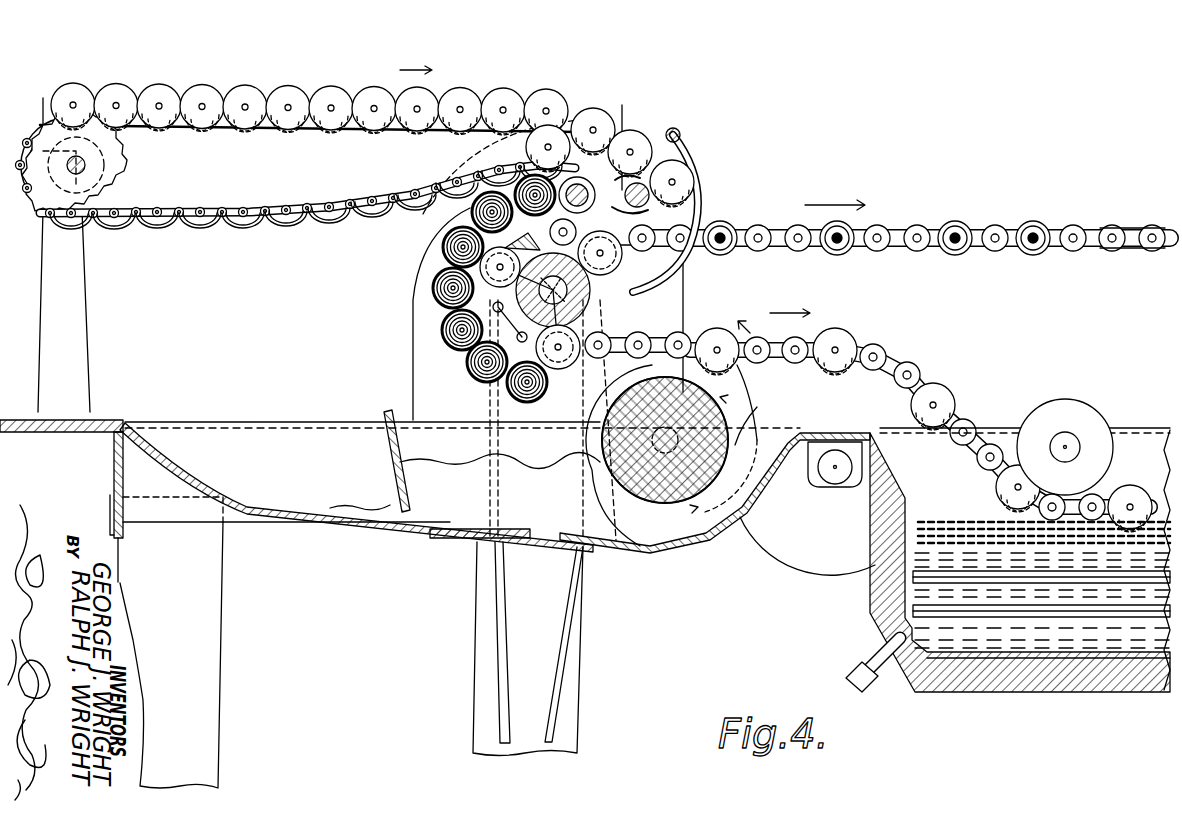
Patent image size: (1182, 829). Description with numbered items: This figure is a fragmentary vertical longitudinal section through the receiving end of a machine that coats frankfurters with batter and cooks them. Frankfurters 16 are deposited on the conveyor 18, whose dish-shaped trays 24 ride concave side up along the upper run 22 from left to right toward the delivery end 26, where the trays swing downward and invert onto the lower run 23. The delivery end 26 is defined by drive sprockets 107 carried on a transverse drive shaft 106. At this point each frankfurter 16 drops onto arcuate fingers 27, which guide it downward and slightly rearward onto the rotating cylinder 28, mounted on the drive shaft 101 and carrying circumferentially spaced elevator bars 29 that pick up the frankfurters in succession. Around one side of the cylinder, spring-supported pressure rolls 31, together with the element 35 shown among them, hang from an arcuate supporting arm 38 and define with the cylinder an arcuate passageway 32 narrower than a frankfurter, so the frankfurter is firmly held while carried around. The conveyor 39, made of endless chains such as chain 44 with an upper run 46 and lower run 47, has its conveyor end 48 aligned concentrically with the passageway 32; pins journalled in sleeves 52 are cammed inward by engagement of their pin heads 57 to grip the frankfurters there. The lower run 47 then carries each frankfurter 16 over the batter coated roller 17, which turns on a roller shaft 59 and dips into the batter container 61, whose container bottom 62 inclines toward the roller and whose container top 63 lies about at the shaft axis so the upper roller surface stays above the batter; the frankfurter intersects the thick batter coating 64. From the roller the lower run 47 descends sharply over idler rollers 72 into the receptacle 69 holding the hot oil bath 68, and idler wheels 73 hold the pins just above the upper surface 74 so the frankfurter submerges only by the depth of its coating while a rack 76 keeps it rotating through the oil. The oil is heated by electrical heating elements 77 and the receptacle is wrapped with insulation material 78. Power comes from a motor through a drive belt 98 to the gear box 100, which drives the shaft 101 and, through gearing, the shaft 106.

The frankfurter 16 is at (257, 96).
The batter coated roller 17 is at (642, 497).
The conveyor 18 is at (122, 108).
The upper run 22 is at (180, 127).
The lower run 23 is at (268, 215).
The dish-shaped trays 24 is at (330, 128).
The delivery end 26 is at (676, 140).
The arcuate fingers 27 is at (694, 180).
The rotating cylinder 28 is at (566, 365).
The elevator bars 29 is at (606, 276).
The pressure rolls 31 is at (468, 362).
The arcuate passageway 32 is at (446, 262).
The brush wheel 35 is at (441, 330).
The supporting arm 38 is at (506, 388).
The conveyor 39 is at (898, 228).
The endless chain 44 is at (1122, 236).
The upper run 46 is at (1045, 233).
The lower run 47 is at (968, 426).
The conveyor end 48 is at (432, 292).
The sleeve 52 is at (735, 235).
The pin head 57 is at (962, 228).
The roller shaft 59 is at (665, 463).
The batter container 61 is at (325, 503).
The container bottom 62 is at (346, 512).
The container top 63 is at (266, 428).
The batter coating 64 is at (596, 417).
The hot oil bath 68 is at (1042, 600).
The receptacle 69 is at (880, 578).
The idler rollers 72 is at (798, 558).
The idler wheels 73 is at (1090, 420).
The upper surface 74 is at (955, 522).
The rack 76 is at (1080, 530).
The electrical heating elements 77 is at (1138, 578).
The insulation material 78 is at (990, 683).
The drive belt 98 is at (500, 606).
The gear box 100 is at (441, 226).
The drive shaft 101 is at (565, 305).
The drive shaft 106 is at (650, 199).
The drive sprockets 107 is at (622, 190).